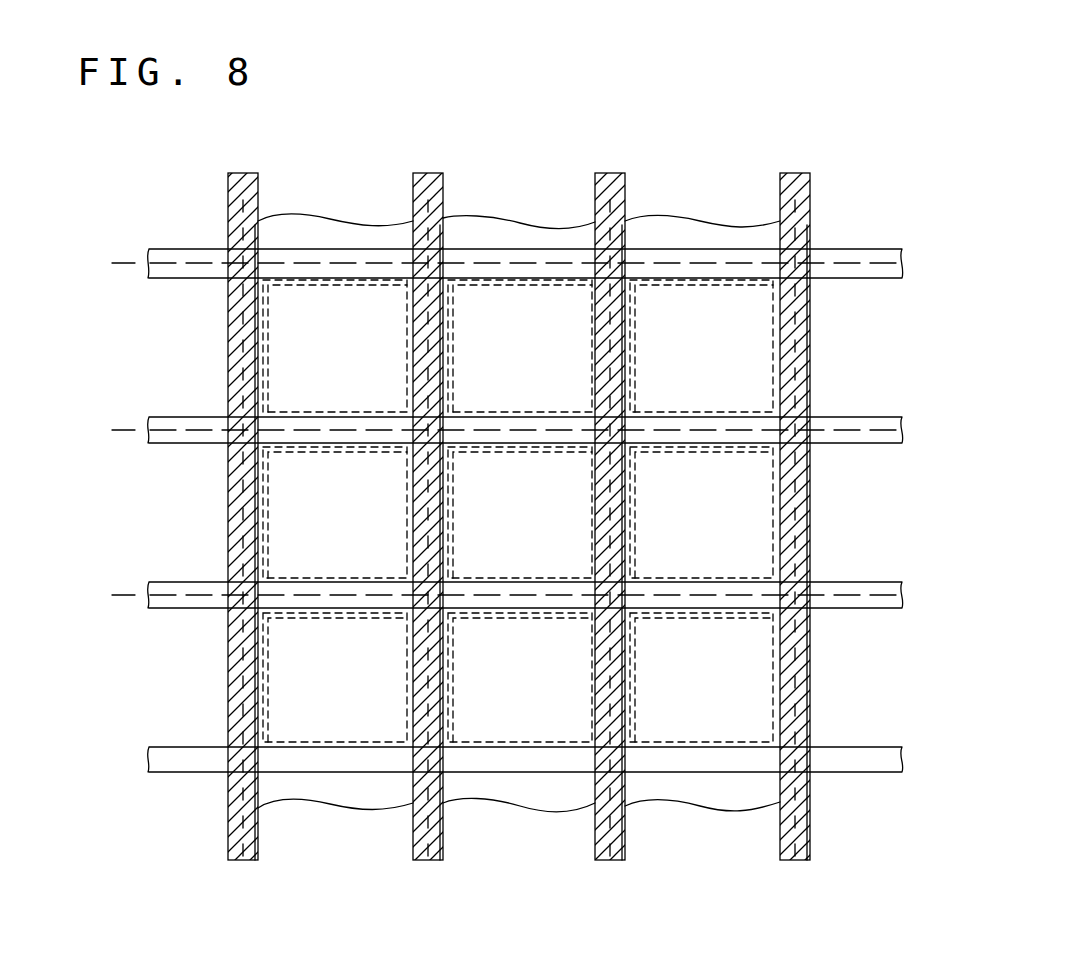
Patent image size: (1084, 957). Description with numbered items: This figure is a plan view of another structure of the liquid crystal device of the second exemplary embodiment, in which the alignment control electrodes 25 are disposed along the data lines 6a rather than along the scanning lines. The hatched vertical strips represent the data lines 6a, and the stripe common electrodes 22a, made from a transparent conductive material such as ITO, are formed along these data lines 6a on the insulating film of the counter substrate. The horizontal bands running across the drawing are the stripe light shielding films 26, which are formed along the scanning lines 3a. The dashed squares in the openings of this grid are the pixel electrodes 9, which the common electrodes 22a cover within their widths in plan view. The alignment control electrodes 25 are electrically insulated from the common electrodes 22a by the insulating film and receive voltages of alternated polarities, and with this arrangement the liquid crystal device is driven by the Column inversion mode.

The data line 6a is at (243, 232).
The stripe common electrode 22a is at (511, 232).
The scanning line 3a is at (897, 272).
The stripe light shielding film 26 is at (160, 418).
The alignment control electrode 25 is at (230, 811).
The pixel electrode 9 is at (709, 526).